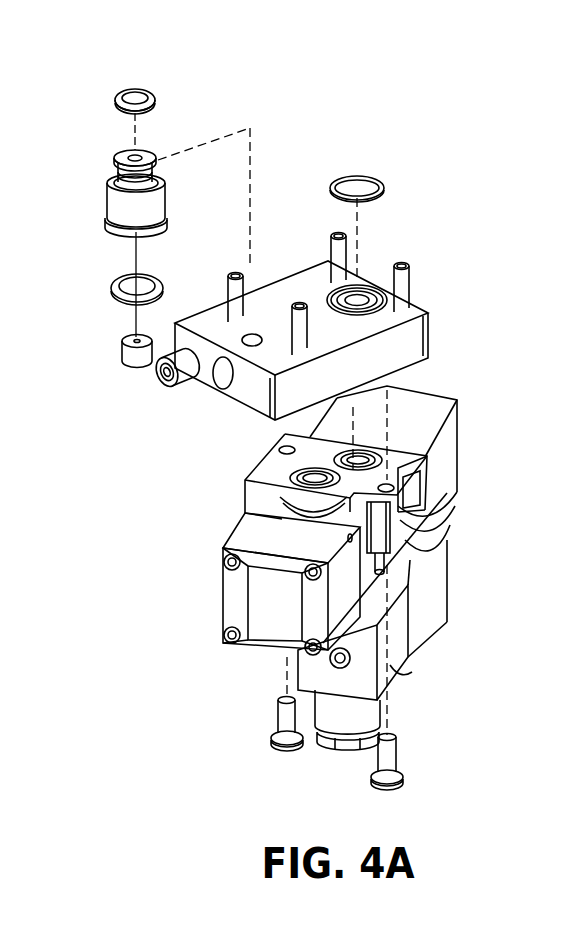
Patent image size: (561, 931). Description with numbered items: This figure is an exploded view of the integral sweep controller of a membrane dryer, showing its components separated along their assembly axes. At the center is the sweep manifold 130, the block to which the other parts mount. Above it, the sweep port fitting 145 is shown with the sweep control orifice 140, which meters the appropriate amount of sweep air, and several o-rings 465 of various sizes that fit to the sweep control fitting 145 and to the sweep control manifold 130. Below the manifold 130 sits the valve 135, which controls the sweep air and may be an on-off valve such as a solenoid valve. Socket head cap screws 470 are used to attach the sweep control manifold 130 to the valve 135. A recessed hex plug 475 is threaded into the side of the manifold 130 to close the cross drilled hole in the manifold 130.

The sweep manifold 130 is at (430, 325).
The valve 135 is at (450, 450).
The sweep control orifice 140 is at (122, 352).
The sweep port fitting 145 is at (108, 200).
The o-rings 465 is at (147, 90).
The socket head cap screws 470 is at (347, 245).
The recessed hex plug 475 is at (167, 387).